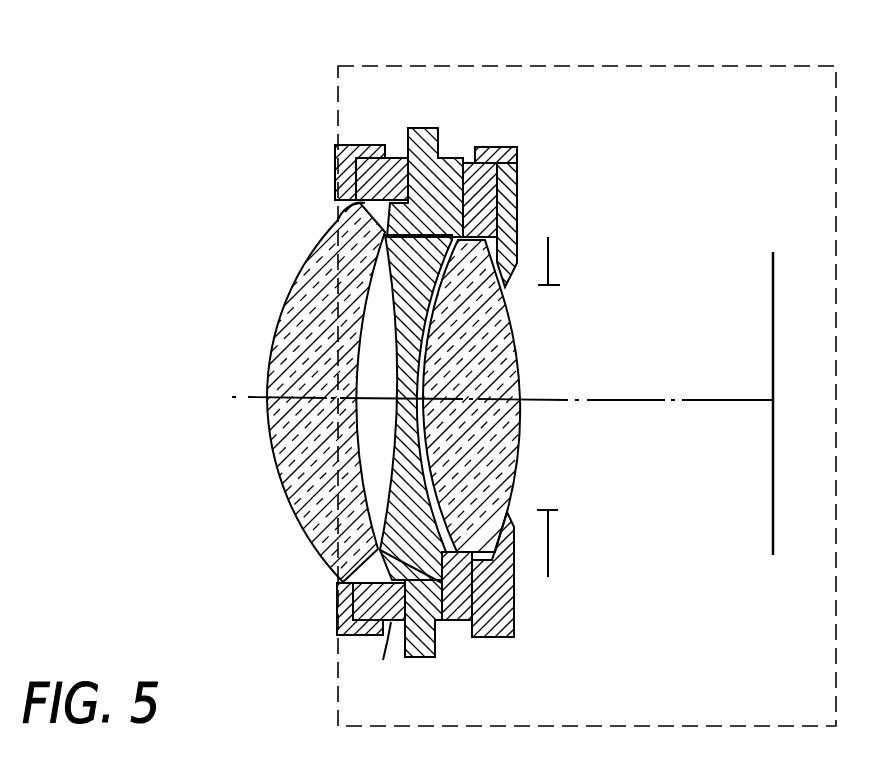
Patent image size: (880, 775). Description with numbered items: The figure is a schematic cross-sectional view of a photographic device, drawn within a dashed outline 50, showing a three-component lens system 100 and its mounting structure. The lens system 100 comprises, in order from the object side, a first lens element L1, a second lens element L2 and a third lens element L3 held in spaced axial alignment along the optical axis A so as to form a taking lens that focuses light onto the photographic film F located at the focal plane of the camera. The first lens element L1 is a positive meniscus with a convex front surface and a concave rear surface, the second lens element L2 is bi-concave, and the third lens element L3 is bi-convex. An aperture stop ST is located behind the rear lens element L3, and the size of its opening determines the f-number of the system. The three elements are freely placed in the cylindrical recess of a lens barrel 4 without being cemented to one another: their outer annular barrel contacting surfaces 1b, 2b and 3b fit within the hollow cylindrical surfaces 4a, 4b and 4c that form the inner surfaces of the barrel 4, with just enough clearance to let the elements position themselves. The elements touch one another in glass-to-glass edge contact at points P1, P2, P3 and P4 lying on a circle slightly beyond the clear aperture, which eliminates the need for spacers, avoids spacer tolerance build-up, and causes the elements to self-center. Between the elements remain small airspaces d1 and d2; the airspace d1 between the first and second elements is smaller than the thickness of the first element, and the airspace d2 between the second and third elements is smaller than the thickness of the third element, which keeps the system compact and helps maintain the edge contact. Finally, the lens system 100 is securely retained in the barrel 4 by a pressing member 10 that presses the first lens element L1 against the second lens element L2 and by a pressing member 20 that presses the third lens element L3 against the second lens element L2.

The camera/housing boundary 50 is at (710, 67).
The three-component lens system 100 is at (209, 353).
The pressing member 10 is at (335, 156).
The outer annular barrel contacting surface 1b is at (345, 212).
The outer annular barrel contacting surface 2b is at (402, 166).
The lens barrel 4 is at (440, 128).
The hollow cylindrical surface 4a is at (353, 622).
The hollow cylindrical surface 4b is at (413, 657).
The hollow cylindrical surface 4c is at (462, 622).
The outer annular barrel contacting surface 3b is at (462, 178).
The pressing member 20 is at (517, 160).
The first lens element L1 is at (316, 353).
The second lens element L2 is at (424, 310).
The third lens element L3 is at (497, 355).
The edge contact point P1 is at (384, 233).
The edge contact point P2 is at (456, 240).
The edge contact point P3 is at (457, 250).
The edge contact point P4 is at (502, 287).
The airspace d1 is at (376, 380).
The airspace d2 is at (440, 392).
The aperture stop ST is at (549, 252).
The impinging light A is at (603, 400).
The photographic film F is at (772, 253).